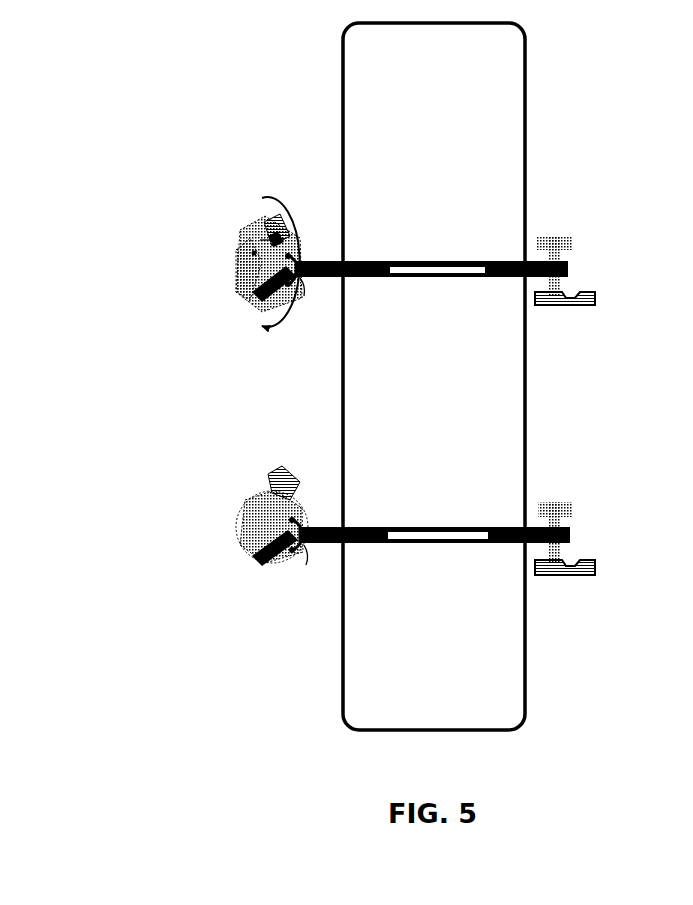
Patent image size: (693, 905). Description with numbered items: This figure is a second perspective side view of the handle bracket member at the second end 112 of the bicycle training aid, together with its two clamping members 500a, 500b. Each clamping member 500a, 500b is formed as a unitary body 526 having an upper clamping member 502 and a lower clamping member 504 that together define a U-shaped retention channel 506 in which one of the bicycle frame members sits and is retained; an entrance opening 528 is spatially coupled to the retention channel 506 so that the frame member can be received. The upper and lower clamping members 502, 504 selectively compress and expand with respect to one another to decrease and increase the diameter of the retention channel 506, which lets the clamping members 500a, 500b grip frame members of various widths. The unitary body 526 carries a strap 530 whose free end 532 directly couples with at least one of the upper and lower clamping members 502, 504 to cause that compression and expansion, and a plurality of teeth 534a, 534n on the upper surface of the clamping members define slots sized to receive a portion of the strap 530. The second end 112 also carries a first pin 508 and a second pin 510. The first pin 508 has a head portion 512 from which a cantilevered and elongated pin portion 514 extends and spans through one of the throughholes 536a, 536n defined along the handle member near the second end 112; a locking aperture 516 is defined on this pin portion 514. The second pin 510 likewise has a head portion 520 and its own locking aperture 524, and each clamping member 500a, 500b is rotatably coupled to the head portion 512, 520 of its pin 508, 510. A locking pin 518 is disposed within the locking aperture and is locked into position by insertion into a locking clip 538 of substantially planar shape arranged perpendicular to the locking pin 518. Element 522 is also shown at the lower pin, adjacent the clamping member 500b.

The second end 112 is at (524, 733).
The clamping member 500a is at (290, 237).
The clamping member 500b is at (263, 568).
The upper clamping member 502 is at (268, 245).
The lower clamping member 504 is at (250, 307).
The retention channel 506 is at (262, 278).
The first pin 508 is at (490, 261).
The second pin 510 is at (508, 545).
The head portion 512 is at (307, 282).
The cantilevered and elongated pin portion 514 is at (470, 278).
The locking aperture 516 is at (442, 266).
The locking pin 518 is at (550, 503).
The head portion 520 is at (306, 527).
The spring 522 is at (330, 547).
The locking aperture 524 is at (440, 536).
The unitary body 526 is at (242, 557).
The entrance opening 528 is at (272, 218).
The strap 530 is at (266, 501).
The free end 532 is at (257, 198).
The tooth 534a is at (255, 252).
The tooth 534n is at (286, 245).
The throughhole 536a is at (528, 257).
The throughhole 536n is at (527, 522).
The locking clip 538 is at (597, 572).